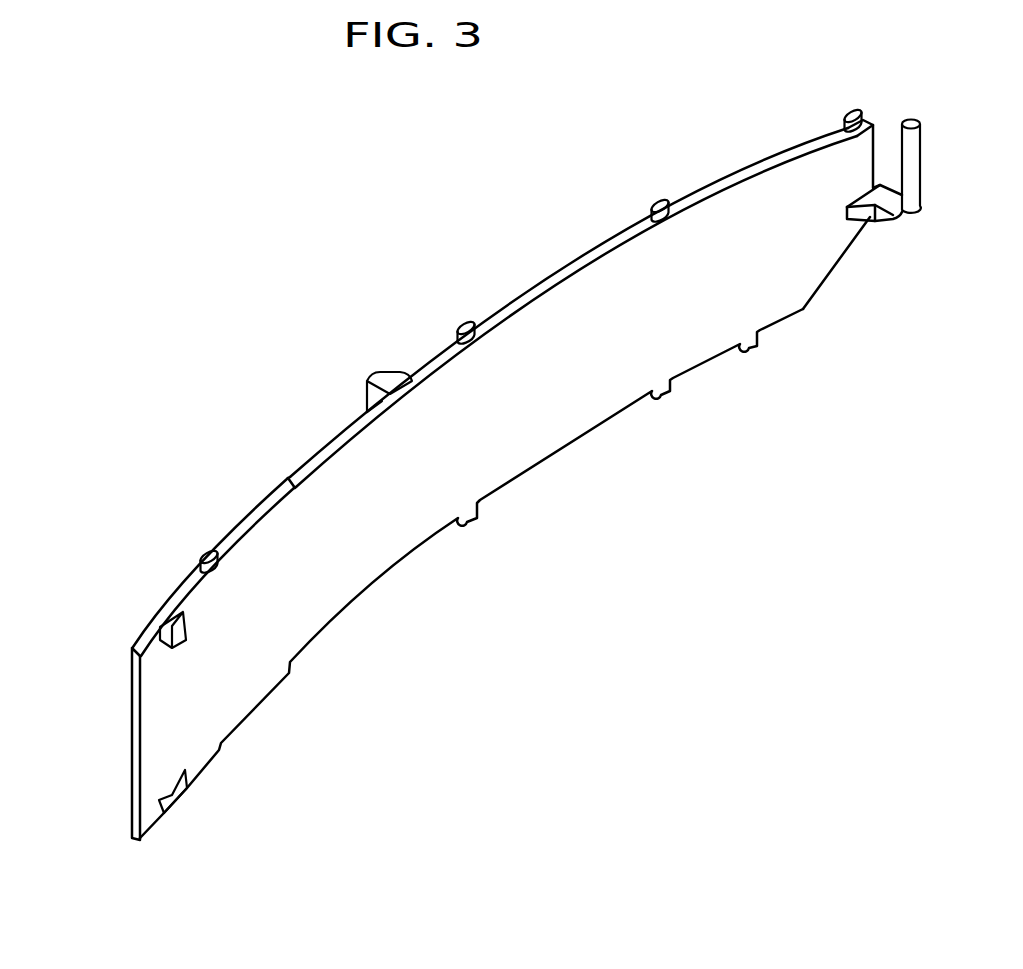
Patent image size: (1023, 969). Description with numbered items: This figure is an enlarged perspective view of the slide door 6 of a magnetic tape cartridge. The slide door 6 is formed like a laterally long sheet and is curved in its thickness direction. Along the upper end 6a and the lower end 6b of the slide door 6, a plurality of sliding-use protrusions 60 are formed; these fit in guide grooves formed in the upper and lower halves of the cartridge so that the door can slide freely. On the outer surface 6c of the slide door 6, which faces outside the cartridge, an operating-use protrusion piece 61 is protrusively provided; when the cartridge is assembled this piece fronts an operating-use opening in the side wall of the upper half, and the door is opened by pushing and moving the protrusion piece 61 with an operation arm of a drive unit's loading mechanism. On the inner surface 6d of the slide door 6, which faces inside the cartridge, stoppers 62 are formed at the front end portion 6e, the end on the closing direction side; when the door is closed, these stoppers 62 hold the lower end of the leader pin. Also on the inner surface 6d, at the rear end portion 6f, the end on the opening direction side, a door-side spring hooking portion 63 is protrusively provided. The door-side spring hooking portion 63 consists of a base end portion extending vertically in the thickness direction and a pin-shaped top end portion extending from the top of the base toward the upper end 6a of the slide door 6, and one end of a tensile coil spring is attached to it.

The slide door 6 is at (237, 290).
The upper end 6a is at (565, 266).
The lower end 6b is at (562, 452).
The outer surface 6c is at (308, 462).
The inner surface 6d is at (345, 535).
The front end portion 6e is at (160, 718).
The rear end portion 6f is at (813, 212).
The sliding-use protrusions 60 is at (853, 112).
The operating-use protrusion piece 61 is at (388, 380).
The stoppers 62 is at (175, 633).
The door-side spring hooking portion 63 is at (913, 178).